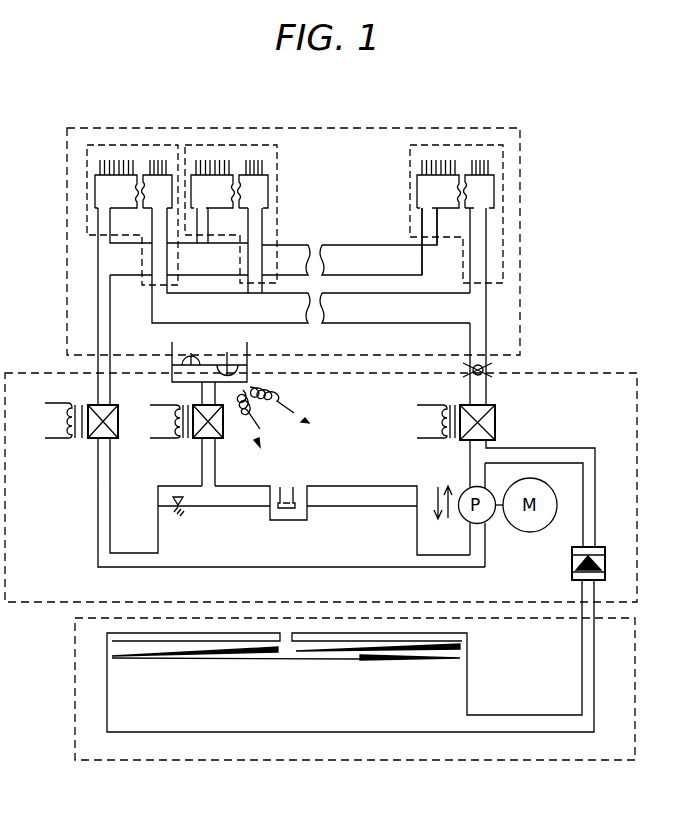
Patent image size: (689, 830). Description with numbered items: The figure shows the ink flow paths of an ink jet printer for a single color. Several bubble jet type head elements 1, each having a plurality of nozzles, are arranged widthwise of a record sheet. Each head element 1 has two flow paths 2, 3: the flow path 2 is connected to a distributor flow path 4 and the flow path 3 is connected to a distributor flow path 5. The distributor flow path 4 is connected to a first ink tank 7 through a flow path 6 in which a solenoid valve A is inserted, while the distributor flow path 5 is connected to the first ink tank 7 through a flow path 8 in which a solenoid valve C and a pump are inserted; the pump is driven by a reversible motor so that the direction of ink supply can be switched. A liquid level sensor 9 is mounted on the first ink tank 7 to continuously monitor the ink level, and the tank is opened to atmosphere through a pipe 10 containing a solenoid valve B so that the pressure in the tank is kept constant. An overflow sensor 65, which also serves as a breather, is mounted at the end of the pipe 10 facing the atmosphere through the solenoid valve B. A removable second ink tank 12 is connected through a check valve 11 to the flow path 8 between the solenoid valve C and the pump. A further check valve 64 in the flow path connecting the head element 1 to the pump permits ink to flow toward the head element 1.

The head element 1 is at (197, 145).
The flow path 2 is at (422, 222).
The flow path 3 is at (487, 230).
The distributor flow path 4 is at (337, 248).
The distributor flow path 5 is at (478, 303).
The flow path 6 is at (97, 505).
The first ink tank 7 is at (329, 487).
The flow path 8 is at (478, 343).
The liquid level sensor 9 is at (301, 510).
The pipe 10 is at (202, 462).
The check valve 11 is at (610, 556).
The second ink tank 12 is at (468, 675).
The check valve 64 is at (492, 368).
The overflow sensor 65 is at (248, 347).
The solenoid valve A is at (73, 407).
The solenoid valve B is at (178, 404).
The solenoid valve C is at (448, 407).